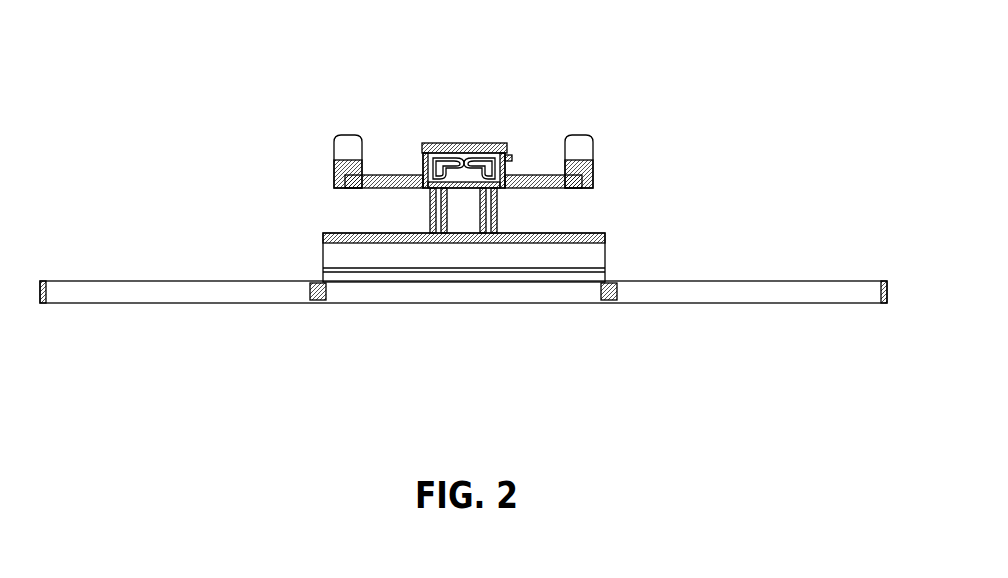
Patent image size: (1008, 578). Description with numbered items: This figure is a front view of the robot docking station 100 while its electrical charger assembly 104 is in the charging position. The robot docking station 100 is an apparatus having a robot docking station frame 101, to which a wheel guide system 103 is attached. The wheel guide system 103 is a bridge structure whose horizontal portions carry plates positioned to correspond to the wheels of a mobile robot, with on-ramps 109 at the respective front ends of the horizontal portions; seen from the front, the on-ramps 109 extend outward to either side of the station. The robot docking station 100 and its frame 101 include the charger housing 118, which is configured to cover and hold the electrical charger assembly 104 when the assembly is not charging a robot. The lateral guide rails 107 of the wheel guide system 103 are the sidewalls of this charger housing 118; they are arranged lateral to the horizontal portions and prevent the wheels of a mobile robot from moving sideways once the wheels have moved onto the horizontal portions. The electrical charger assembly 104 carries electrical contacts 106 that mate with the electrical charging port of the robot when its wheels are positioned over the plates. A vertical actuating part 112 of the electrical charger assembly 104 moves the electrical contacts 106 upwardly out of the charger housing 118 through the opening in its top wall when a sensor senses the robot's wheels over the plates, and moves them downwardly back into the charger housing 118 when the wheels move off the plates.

The robot docking station 100 is at (160, 68).
The robot docking station frame 101 is at (240, 235).
The wheel guide system 103 is at (157, 233).
The electrical charger assembly 104 is at (313, 172).
The electrical contacts 106 is at (344, 139).
The lateral guide rails 107 is at (322, 257).
The on-ramps 109 is at (103, 292).
The vertical actuating part 112 is at (418, 213).
The charger housing 118 is at (607, 210).